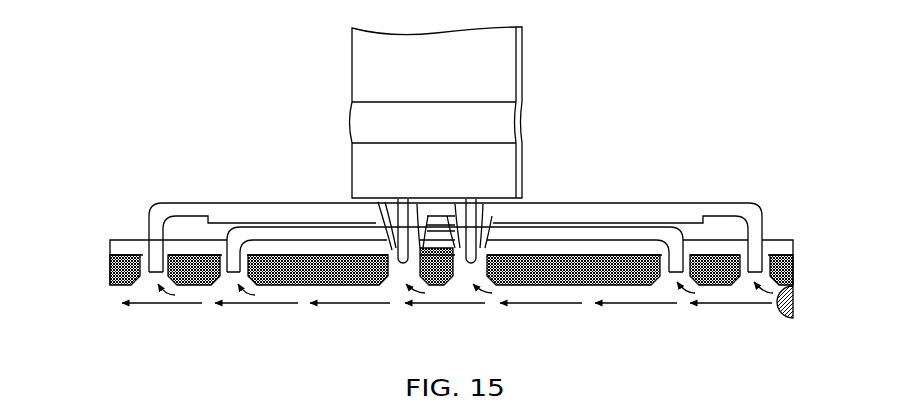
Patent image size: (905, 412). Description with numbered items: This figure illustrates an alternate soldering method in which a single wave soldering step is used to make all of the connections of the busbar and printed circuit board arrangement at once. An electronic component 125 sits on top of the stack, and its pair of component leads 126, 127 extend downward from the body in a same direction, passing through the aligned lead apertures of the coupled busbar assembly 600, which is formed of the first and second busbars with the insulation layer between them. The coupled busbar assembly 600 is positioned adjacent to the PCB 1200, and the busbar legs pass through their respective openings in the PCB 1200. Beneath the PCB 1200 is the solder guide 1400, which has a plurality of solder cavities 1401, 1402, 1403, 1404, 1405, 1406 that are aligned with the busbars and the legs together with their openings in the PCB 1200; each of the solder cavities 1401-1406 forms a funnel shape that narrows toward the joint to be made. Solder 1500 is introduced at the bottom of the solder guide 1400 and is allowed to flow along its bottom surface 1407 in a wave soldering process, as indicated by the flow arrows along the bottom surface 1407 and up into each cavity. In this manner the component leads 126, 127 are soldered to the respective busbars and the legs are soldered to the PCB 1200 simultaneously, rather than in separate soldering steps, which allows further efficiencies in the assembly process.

The electronic component 125 is at (503, 61).
The component lead 126 is at (402, 203).
The component lead 127 is at (467, 203).
The coupled busbar assembly 600 is at (582, 202).
The PCB 1200 is at (793, 245).
The solder guide 1400 is at (110, 265).
The solder cavity 1401 is at (145, 284).
The solder cavity 1402 is at (228, 284).
The solder cavity 1403 is at (385, 285).
The solder cavity 1404 is at (453, 287).
The solder cavity 1405 is at (660, 283).
The solder cavity 1406 is at (740, 283).
The bottom surface 1407 is at (120, 287).
The solder 1500 is at (796, 302).